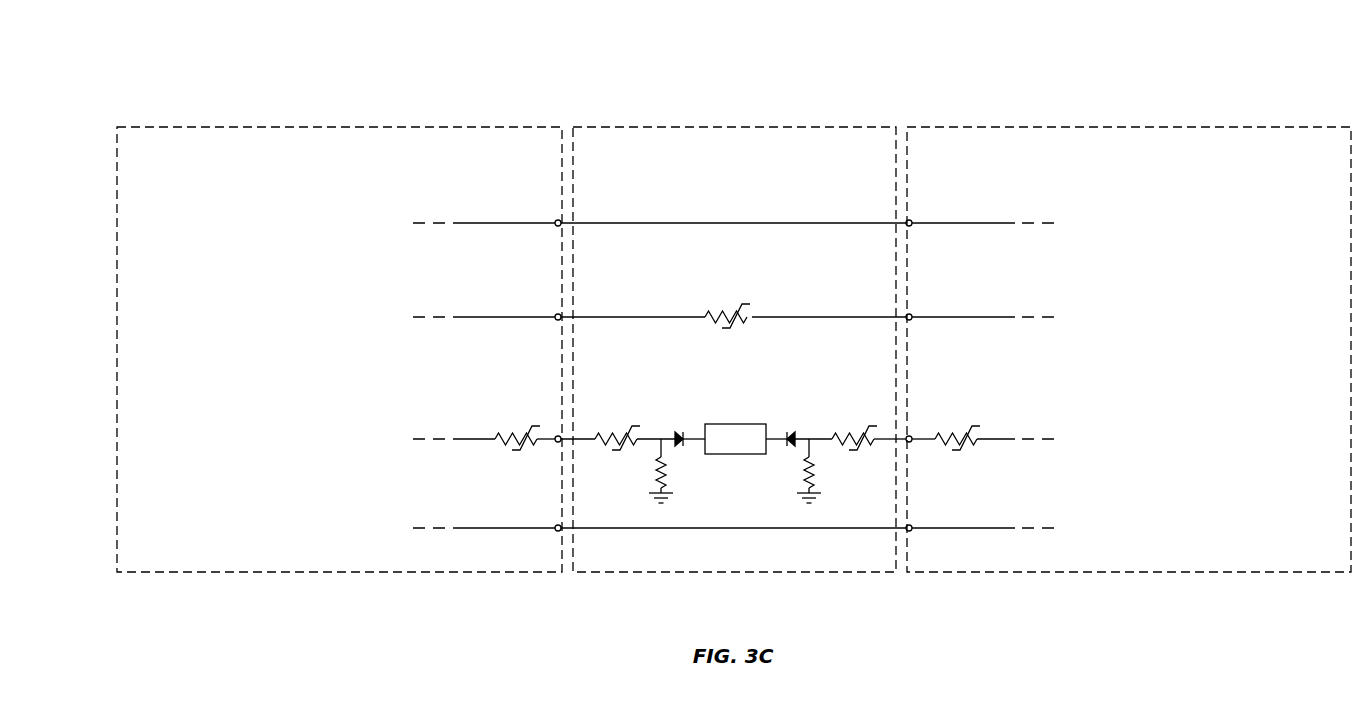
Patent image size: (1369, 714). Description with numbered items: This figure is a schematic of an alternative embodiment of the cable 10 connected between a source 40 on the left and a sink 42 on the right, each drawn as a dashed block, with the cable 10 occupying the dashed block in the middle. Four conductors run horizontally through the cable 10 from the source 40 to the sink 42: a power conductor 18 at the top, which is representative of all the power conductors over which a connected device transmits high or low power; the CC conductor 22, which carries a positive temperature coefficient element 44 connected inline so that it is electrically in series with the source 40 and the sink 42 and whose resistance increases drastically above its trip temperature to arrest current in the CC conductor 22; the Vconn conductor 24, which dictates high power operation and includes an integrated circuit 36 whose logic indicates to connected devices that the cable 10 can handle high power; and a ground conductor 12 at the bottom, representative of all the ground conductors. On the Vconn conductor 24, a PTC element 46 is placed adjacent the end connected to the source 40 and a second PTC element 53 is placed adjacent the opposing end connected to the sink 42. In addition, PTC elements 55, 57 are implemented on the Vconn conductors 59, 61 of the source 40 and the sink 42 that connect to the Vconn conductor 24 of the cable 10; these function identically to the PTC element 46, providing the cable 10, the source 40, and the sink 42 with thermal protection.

The cable 10 is at (743, 127).
The ground conductor 12 is at (722, 528).
The power conductor 18 is at (713, 223).
The CC conductor 22 is at (647, 317).
The Vconn conductor 24 is at (820, 438).
The integrated circuit 36 is at (737, 424).
The source device 40 is at (303, 127).
The sink device 42 is at (1158, 127).
The positive temperature coefficient element 44 is at (731, 312).
The second PTC element 46 is at (619, 436).
The second PTC element on Vconn conductor 53 is at (859, 436).
The PTC element 55 is at (519, 436).
The PTC element 57 is at (959, 436).
The Vconn conductor of the source 59 is at (477, 439).
The Vconn conductor of the sink 61 is at (1003, 439).